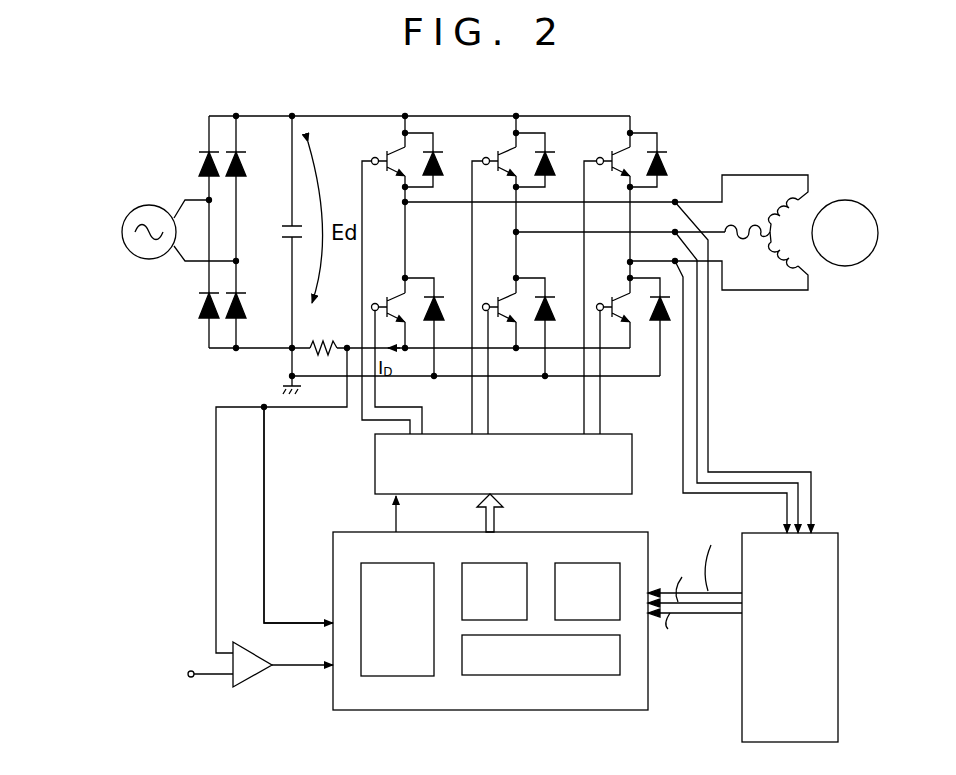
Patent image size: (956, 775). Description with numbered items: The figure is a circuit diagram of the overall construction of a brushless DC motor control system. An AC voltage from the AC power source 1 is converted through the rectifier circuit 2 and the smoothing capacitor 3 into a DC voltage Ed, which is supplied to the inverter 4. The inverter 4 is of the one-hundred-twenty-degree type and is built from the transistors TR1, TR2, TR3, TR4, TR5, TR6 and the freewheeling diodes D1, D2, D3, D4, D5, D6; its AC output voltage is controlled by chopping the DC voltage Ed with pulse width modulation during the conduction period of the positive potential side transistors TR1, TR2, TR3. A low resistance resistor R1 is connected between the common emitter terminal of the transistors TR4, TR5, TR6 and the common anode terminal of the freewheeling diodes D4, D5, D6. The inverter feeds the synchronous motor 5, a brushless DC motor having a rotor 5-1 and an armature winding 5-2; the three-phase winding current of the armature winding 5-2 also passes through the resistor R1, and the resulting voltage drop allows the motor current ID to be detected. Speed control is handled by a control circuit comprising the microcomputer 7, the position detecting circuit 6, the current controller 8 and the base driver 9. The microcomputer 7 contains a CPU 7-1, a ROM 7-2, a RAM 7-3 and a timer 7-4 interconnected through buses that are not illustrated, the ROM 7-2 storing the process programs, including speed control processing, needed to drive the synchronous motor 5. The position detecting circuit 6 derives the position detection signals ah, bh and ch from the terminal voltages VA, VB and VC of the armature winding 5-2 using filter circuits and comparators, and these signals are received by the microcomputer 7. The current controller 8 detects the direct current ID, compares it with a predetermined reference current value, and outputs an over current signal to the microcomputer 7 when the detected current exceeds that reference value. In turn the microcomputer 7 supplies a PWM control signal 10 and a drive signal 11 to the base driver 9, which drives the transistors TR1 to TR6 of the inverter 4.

The AC power source 1 is at (161, 181).
The rectifier circuit 2 is at (235, 106).
The smoothing capacitor 3 is at (269, 222).
The inverter 4 is at (555, 106).
The synchronous motor 5 is at (801, 232).
The rotor 5-1 is at (840, 266).
The armature winding 5-2 is at (778, 257).
The position detecting circuit 6 is at (742, 705).
The microcomputer 7 is at (490, 639).
The CPU 7-1 is at (397, 607).
The ROM 7-2 is at (494, 579).
The RAM 7-3 is at (587, 579).
The timer 7-4 is at (541, 670).
The current controller 8 is at (254, 677).
The base driver 9 is at (365, 464).
The PWM control signal 10 is at (375, 514).
The drive signal 11 is at (507, 513).
The resistor R1 is at (313, 345).
The transistor TR1 is at (390, 153).
The transistor TR2 is at (502, 153).
The transistor TR3 is at (617, 153).
The transistor TR4 is at (398, 284).
The transistor TR5 is at (510, 333).
The transistor TR6 is at (624, 333).
The freewheeling diode D1 is at (441, 148).
The freewheeling diode D2 is at (542, 150).
The freewheeling diode D3 is at (663, 151).
The freewheeling diode D4 is at (442, 326).
The freewheeling diode D5 is at (546, 328).
The freewheeling diode D6 is at (664, 330).